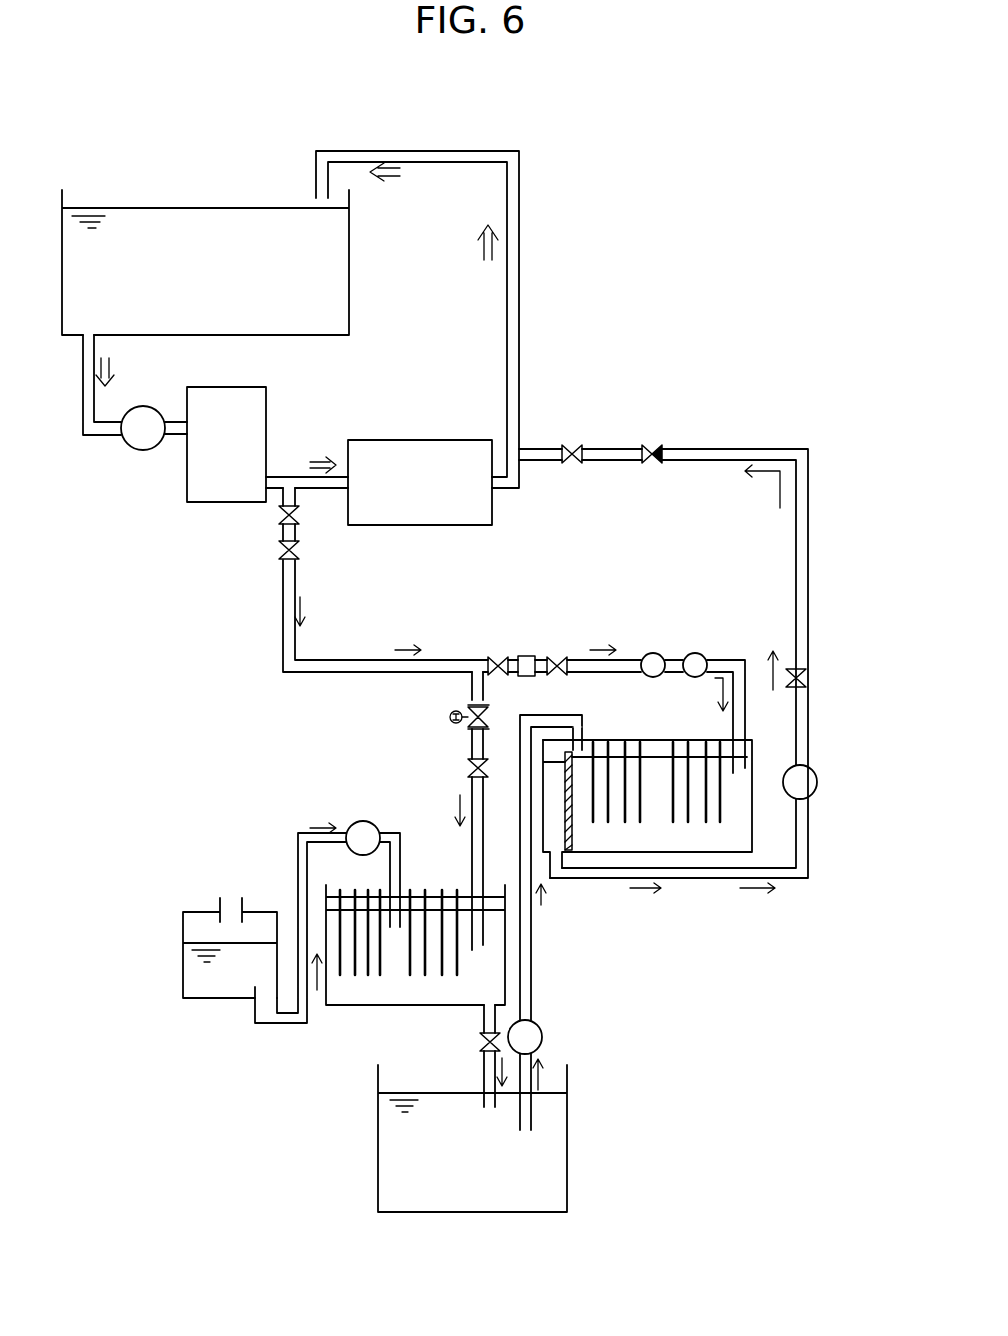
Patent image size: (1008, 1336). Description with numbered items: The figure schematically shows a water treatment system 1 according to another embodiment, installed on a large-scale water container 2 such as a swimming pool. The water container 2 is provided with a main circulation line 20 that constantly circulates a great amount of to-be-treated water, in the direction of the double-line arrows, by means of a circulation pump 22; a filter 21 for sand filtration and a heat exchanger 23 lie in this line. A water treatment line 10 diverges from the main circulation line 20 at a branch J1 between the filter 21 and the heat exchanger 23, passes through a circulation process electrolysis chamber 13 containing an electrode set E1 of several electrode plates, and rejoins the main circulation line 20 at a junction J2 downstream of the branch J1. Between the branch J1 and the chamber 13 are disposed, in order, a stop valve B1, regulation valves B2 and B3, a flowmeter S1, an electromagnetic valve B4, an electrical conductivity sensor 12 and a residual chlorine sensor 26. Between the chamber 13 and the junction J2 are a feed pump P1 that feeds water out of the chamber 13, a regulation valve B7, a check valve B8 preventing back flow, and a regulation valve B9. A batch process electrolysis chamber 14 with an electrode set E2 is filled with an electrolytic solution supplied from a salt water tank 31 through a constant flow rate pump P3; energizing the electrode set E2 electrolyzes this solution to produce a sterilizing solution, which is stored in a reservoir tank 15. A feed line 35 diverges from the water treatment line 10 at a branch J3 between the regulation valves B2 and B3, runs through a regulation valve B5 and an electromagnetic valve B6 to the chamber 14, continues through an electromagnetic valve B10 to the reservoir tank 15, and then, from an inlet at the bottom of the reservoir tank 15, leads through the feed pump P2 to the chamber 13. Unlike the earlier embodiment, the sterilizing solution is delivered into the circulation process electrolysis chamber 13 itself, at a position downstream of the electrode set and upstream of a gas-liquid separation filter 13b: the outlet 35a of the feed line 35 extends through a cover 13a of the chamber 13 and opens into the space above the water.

The water treatment system 1 is at (638, 360).
The water container 2 is at (150, 223).
The water treatment line 10 is at (733, 452).
The electrical conductivity sensor 12 is at (655, 652).
The circulation process electrolysis chamber 13 is at (742, 820).
The cover 13a is at (556, 737).
The gas-liquid separation filter 13b is at (574, 826).
The batch process electrolysis chamber 14 is at (452, 1005).
The reservoir tank 15 is at (387, 1158).
The main circulation line 20 is at (512, 307).
The filter 21 is at (240, 388).
The circulation pump 22 is at (144, 406).
The heat exchanger 23 is at (412, 440).
The residual chlorine sensor 26 is at (702, 653).
The salt water tank 31 is at (213, 990).
The feed line 35 is at (535, 957).
The outlet 35a is at (582, 737).
The stop valve B1 is at (275, 510).
The regulation valve B2 is at (275, 547).
The regulation valve B3 is at (498, 650).
The electromagnetic valve B4 is at (560, 653).
The regulation valve B5 is at (448, 716).
The electromagnetic valve B6 is at (462, 768).
The regulation valve B7 is at (812, 679).
The check valve B8 is at (651, 467).
The regulation valve B9 is at (567, 466).
The electromagnetic valve B10 is at (479, 1048).
The electrode set E1 is at (578, 735).
The electrode set E2 is at (337, 890).
The branch J1 is at (290, 478).
The junction J2 is at (513, 452).
The branch J3 is at (480, 657).
The feed pump P1 is at (818, 783).
The feed pump P2 is at (547, 1033).
The constant flow rate pump P3 is at (361, 820).
The flowmeter S1 is at (527, 654).